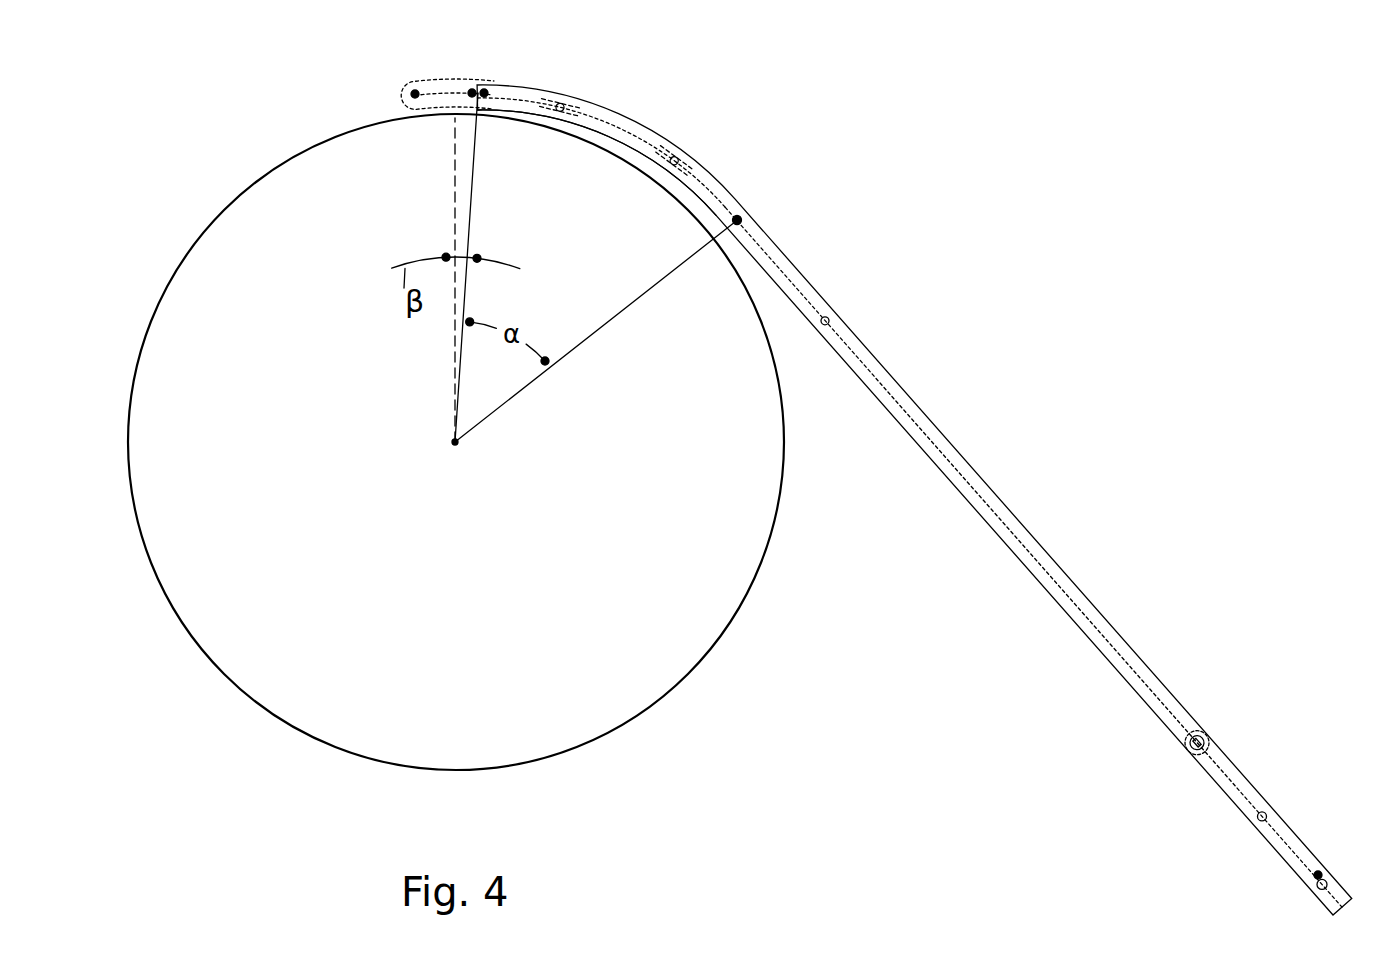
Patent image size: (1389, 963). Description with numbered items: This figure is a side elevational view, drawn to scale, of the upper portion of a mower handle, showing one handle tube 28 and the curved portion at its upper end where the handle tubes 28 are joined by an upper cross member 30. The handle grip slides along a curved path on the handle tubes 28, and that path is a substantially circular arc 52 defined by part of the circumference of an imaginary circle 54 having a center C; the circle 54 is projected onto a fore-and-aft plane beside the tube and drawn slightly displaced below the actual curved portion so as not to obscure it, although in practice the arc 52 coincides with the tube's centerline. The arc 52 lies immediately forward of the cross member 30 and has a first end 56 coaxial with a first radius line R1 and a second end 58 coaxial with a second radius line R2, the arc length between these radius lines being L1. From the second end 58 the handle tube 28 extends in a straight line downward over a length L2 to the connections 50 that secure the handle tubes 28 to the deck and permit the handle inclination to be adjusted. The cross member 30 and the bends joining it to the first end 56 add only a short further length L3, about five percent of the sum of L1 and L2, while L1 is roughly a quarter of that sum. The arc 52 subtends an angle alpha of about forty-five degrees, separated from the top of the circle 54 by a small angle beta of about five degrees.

The handle tubes 28 is at (876, 358).
The upper cross member 30 is at (430, 81).
The connections 50 is at (1321, 872).
The circular arc 52 is at (622, 157).
The imaginary circle 54 is at (762, 560).
The first end 56 is at (486, 86).
The second end 58 is at (745, 218).
The first radius line R1 is at (476, 200).
The second radius line R2 is at (623, 307).
The length of circular arc L1 is at (637, 137).
The straight length of handle tubes L2 is at (914, 415).
The additional length of cross member and bends L3 is at (458, 90).
The center of circle C is at (466, 306).